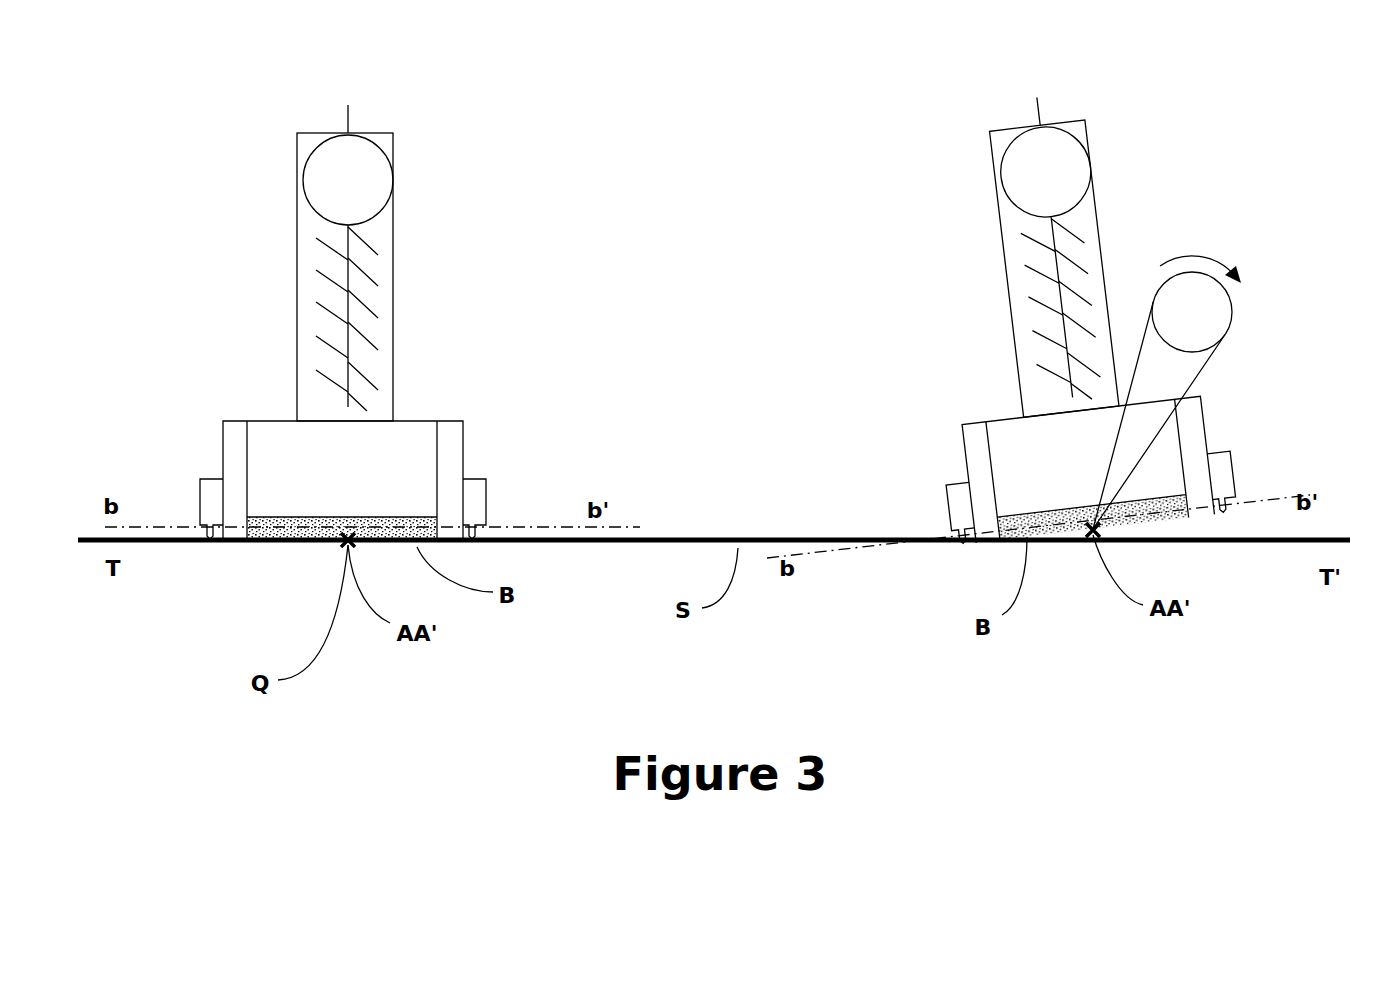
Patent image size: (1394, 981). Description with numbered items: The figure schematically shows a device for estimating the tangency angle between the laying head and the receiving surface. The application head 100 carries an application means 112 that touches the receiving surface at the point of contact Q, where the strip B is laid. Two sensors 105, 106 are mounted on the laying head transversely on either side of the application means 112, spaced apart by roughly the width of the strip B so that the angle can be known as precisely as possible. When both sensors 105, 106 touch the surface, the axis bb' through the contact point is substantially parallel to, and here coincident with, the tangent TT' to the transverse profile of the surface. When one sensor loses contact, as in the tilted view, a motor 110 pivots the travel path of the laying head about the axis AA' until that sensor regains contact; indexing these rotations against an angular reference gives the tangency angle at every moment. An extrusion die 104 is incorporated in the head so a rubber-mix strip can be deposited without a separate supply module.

The application head 100 is at (363, 448).
The extrusion die 104 is at (298, 281).
The sensor 105 is at (475, 508).
The sensor 106 is at (211, 500).
The motor 110 is at (1218, 313).
The application means 112 is at (323, 545).